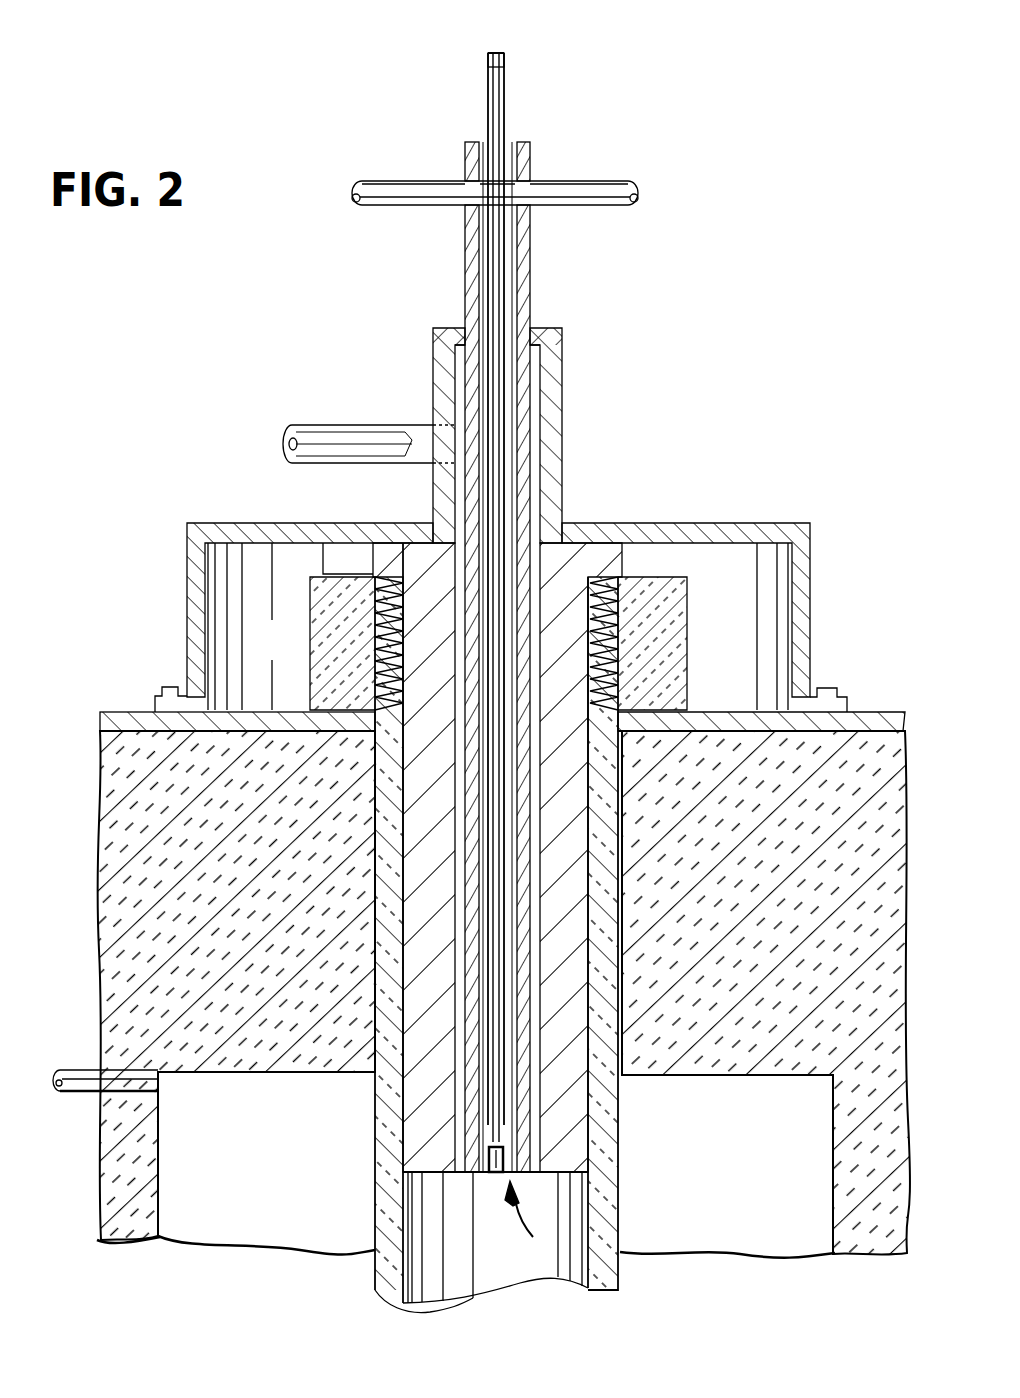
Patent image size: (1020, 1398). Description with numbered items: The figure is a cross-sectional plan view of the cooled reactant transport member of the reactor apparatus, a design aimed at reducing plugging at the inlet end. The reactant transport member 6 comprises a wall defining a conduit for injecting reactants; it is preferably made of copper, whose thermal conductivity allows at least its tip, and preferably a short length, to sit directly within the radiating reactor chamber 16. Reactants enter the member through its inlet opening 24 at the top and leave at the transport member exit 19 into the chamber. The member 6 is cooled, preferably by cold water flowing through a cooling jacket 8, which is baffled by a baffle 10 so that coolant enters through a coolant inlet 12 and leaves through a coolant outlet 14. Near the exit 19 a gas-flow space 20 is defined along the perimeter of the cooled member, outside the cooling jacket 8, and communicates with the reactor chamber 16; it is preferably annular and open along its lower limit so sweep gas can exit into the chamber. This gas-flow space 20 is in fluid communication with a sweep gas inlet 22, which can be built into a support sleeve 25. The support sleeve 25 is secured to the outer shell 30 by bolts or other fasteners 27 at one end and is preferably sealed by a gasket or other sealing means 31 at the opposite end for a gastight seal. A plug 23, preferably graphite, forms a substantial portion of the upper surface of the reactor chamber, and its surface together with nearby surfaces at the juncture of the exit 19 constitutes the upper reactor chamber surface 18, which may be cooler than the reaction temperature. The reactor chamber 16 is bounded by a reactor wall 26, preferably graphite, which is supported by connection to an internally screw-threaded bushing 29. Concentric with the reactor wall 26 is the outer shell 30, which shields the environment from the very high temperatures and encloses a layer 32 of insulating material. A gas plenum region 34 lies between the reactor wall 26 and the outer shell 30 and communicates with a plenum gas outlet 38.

The reactant transport member 6 is at (498, 97).
The cooling jacket 8 is at (465, 253).
The baffle 10 is at (466, 157).
The coolant inlet 12 is at (364, 184).
The coolant outlet 14 is at (607, 185).
The reactor chamber 16 is at (480, 1280).
The upper reactor chamber surface 18 is at (537, 1217).
The transport member exit 19 is at (495, 1178).
The gas-flow space 20 is at (458, 1173).
The sweep gas inlet 22 is at (318, 464).
The plug 23 is at (418, 556).
The inlet opening 24 is at (494, 53).
The support sleeve 25 is at (190, 570).
The reactor wall 26 is at (388, 1111).
The fasteners 27 is at (172, 687).
The internally screw-threaded bushing 29 is at (313, 624).
The outer shell 30 is at (123, 713).
The sealing means 31 is at (538, 329).
The layer of insulating material 32 is at (108, 819).
The gas plenum region 34 is at (257, 1231).
The plenum gas outlet 38 is at (76, 1096).